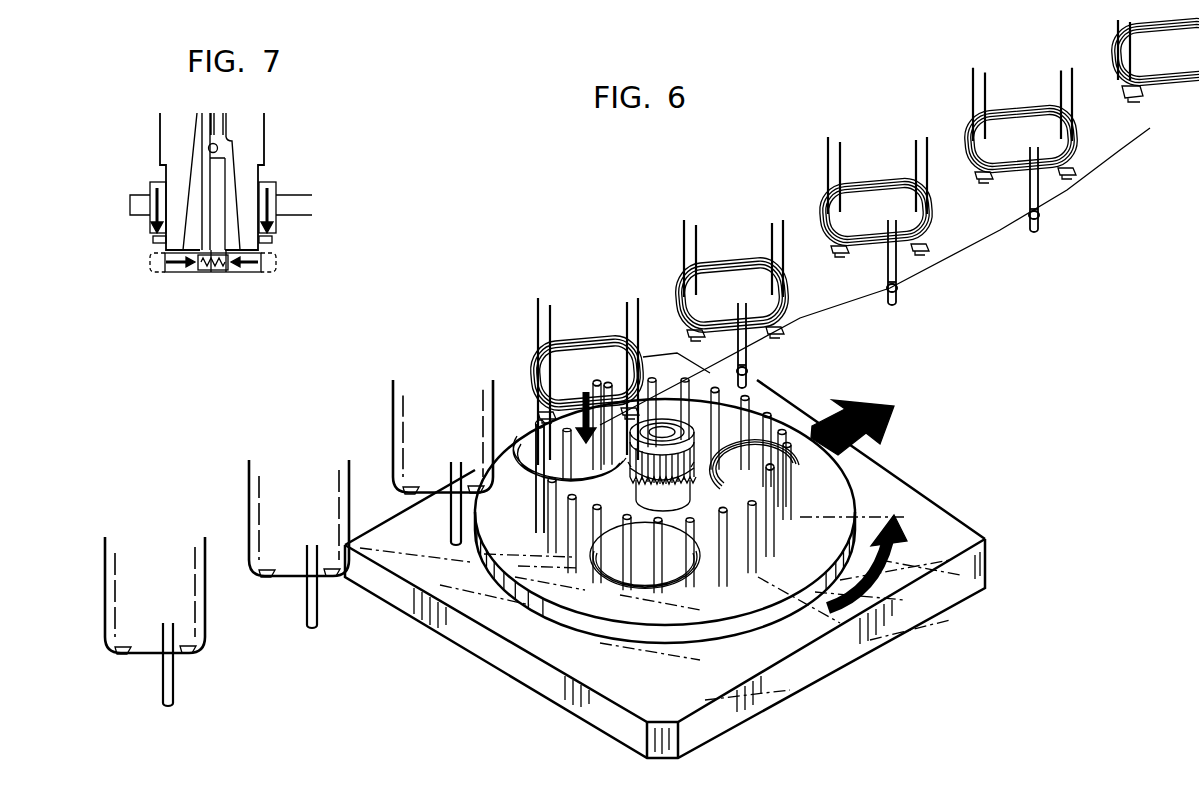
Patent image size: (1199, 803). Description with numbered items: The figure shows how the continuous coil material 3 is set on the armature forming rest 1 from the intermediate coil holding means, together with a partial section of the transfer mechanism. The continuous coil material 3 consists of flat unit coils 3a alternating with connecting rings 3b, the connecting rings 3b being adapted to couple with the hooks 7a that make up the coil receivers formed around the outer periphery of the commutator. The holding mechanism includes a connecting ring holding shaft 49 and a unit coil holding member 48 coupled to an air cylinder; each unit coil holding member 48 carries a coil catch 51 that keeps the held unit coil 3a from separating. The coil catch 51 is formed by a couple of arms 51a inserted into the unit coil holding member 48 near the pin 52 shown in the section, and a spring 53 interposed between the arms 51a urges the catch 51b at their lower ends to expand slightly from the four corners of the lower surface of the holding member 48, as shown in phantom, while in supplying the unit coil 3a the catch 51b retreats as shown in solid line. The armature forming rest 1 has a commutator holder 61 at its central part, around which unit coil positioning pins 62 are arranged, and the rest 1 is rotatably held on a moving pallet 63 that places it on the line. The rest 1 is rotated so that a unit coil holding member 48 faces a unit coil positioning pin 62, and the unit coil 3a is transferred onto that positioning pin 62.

In FIG. 6, the armature forming rest 1 is at (568, 590).
In FIG. 6, the continuous coil material 3 is at (975, 230).
In FIG. 6, the unit coil 3a is at (532, 375).
In FIG. 6, the connecting ring 3b is at (640, 468).
In FIG. 6, the hook 7a is at (700, 470).
In FIG. 7, the unit coil holding member 48 is at (266, 150).
In FIG. 6, the unit coil holding member 48 is at (105, 578).
In FIG. 6, the connecting ring holding shaft 49 is at (172, 704).
In FIG. 7, the coil catch 51 is at (195, 275).
In FIG. 6, the coil catch 51 is at (1124, 96).
In FIG. 7, the arm 51a is at (205, 178).
In FIG. 7, the catch 51b is at (150, 264).
In FIG. 6, the catch 51b is at (118, 658).
In FIG. 7, the pivot pin 52 is at (226, 137).
In FIG. 7, the spring 53 is at (213, 274).
In FIG. 6, the commutator holder 61 is at (665, 485).
In FIG. 6, the unit coil positioning pin 62 is at (688, 568).
In FIG. 6, the moving pallet 63 is at (945, 520).